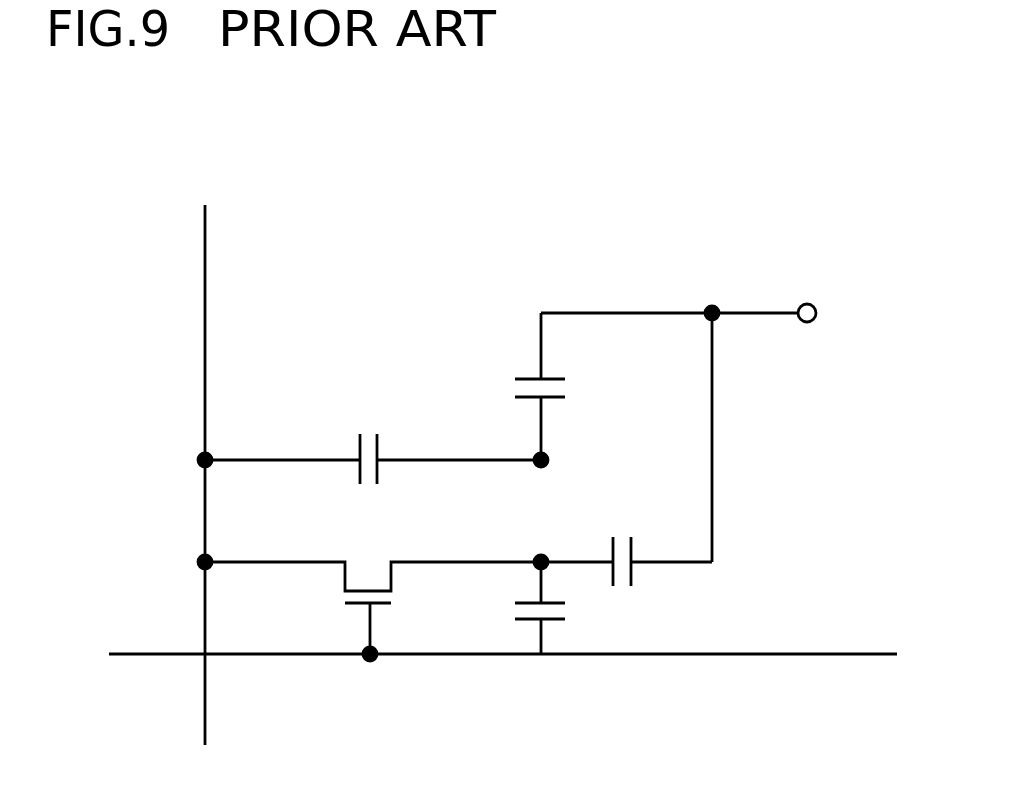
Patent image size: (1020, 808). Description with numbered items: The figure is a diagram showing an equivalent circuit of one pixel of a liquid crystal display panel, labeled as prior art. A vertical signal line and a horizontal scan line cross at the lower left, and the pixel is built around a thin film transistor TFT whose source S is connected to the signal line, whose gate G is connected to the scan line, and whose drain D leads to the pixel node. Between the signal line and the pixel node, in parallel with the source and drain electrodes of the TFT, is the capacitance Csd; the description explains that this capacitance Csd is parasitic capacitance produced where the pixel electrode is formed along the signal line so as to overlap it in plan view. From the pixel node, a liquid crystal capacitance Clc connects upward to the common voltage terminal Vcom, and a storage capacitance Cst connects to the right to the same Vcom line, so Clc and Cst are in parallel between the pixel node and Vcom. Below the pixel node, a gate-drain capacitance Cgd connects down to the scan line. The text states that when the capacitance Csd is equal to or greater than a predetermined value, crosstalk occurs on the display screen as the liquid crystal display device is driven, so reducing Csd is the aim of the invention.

The capacitance Csd is at (373, 439).
The liquid crystal capacitance Clc is at (565, 386).
The common voltage Vcom is at (719, 429).
The storage capacitance Cst is at (626, 540).
The gate-drain capacitance Cgd is at (575, 604).
The element TFT is at (369, 592).
The source electrode S is at (320, 586).
The drain electrode D is at (418, 586).
The gate G is at (396, 627).